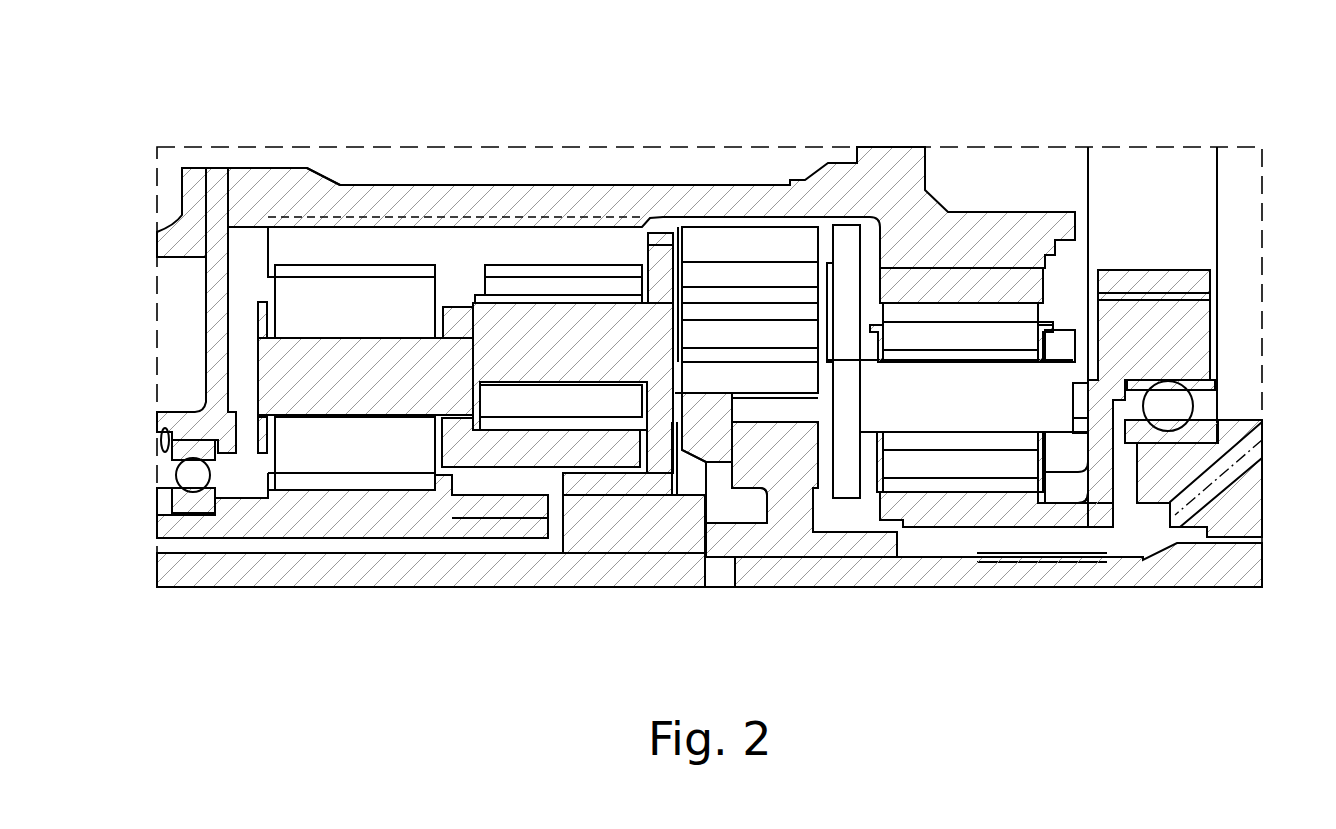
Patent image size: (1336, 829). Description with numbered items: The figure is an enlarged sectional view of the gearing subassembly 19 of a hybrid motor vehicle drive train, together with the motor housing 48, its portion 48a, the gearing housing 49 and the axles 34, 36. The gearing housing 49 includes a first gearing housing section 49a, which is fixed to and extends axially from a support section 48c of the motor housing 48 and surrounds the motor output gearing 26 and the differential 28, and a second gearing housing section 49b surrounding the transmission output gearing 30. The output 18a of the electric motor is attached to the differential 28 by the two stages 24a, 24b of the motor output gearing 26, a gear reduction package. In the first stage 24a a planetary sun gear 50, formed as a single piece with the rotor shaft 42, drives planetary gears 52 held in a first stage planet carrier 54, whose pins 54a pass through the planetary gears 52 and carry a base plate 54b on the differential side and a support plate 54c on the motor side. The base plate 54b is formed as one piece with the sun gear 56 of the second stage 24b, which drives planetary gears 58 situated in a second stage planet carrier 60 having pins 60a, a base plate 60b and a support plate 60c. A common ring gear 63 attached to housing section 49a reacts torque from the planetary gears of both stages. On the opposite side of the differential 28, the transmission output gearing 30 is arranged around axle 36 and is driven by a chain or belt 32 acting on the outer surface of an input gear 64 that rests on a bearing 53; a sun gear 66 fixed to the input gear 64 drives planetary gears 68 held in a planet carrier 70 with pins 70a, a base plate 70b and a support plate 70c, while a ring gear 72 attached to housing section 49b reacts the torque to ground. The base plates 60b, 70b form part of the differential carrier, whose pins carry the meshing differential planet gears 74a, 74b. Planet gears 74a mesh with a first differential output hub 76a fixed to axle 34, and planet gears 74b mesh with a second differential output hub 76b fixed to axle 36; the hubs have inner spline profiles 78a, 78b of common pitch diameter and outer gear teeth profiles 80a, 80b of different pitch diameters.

The output of motor 18a is at (258, 556).
The gearing subassembly 19 is at (1122, 550).
The first stage 24a is at (306, 291).
The second stage 24b is at (575, 232).
The motor output gearing 26 is at (242, 360).
The differential 28 is at (712, 275).
The transmission output gearing 30 is at (1207, 262).
The chain or belt 32 is at (1195, 165).
The axle 34 is at (480, 573).
The axle 36 is at (1013, 570).
The rotor shaft 42 is at (183, 530).
The motor housing 48 is at (175, 251).
The cover flange 48a is at (180, 245).
The support section 48c is at (218, 200).
The gearing housing 49 is at (940, 188).
The first gearing housing section 49a is at (285, 195).
The second gearing housing section 49b is at (1000, 232).
The planetary sun gear 50 is at (365, 520).
The planetary gears 52 is at (458, 306).
The bearing 53 is at (1205, 427).
The first stage planet carrier 54 is at (306, 287).
The pins 54a is at (256, 358).
The base plate 54b is at (457, 318).
The support plate 54c is at (256, 318).
The sun gear 56 is at (497, 443).
The planetary gear 58 is at (562, 262).
The second stage planet carrier 60 is at (575, 263).
The pins 60a is at (557, 328).
The base plate 60b is at (665, 228).
The support plate 60c is at (480, 400).
The common ring gear 63 is at (455, 300).
The input gear 64 is at (1178, 338).
The sun gear 66 is at (958, 503).
The planetary gears 68 is at (988, 337).
The planet carrier 70 is at (845, 220).
The pins 70a is at (955, 285).
The base plate 70b is at (907, 372).
The support plate 70c is at (1060, 345).
The ring gear 72 is at (1043, 285).
The planetary gears 74a is at (752, 272).
The planetary gears 74b is at (800, 413).
The first differential output hub 76a is at (597, 545).
The second differential output hub 76b is at (818, 570).
The inner spline profile 78a is at (675, 522).
The inner spline profile 78b is at (745, 560).
The outer gear teeth profile 80a is at (715, 435).
The outer gear teeth profile 80b is at (826, 562).